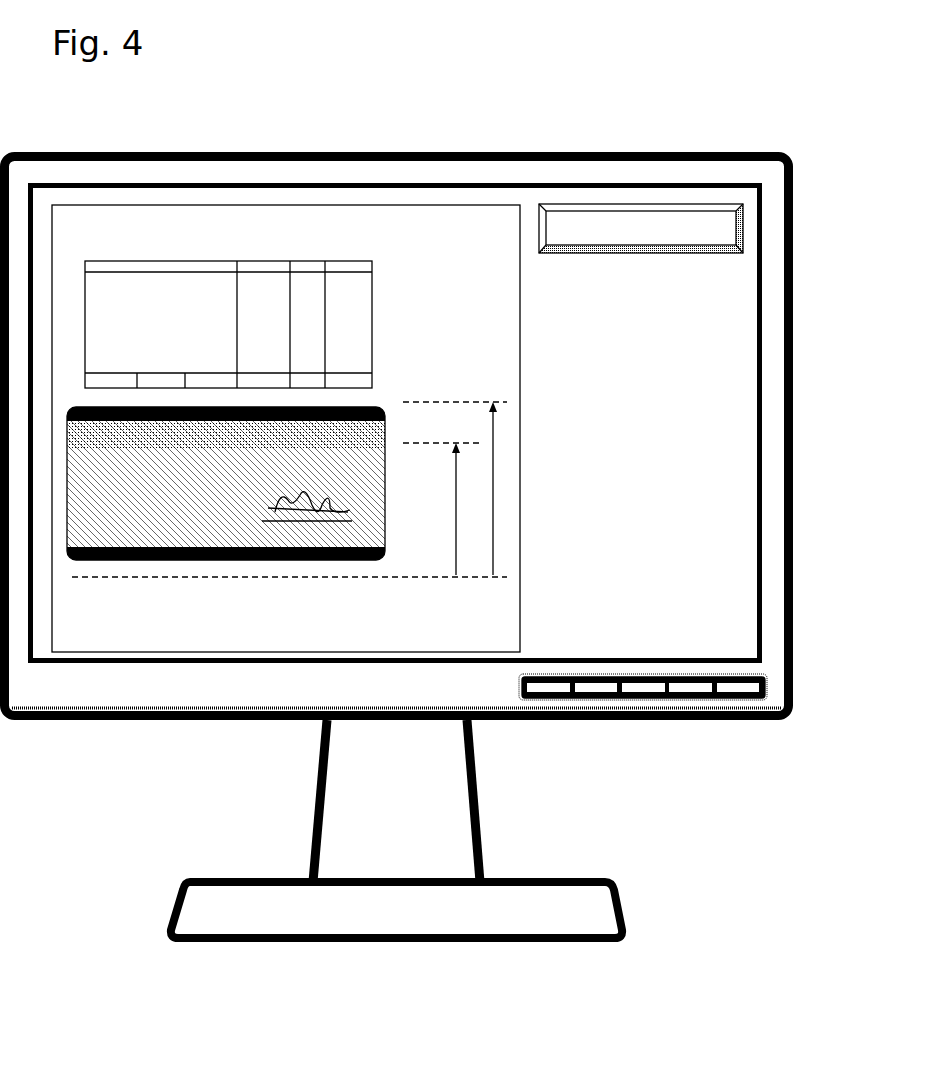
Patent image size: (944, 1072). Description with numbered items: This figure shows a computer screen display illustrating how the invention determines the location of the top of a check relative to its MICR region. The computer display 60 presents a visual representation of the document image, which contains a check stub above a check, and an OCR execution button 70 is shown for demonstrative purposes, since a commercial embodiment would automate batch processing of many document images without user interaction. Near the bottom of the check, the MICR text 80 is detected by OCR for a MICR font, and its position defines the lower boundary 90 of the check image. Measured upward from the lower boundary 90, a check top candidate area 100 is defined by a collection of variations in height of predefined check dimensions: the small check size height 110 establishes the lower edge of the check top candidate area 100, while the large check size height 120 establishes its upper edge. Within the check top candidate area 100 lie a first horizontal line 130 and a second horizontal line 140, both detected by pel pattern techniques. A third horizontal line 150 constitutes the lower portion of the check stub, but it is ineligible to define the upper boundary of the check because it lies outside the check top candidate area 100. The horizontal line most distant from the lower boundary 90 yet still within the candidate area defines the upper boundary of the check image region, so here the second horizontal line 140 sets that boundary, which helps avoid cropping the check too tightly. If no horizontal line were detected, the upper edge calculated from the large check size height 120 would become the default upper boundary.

The computer display 60 is at (387, 152).
The OCR execution button 70 is at (705, 255).
The MICR text 80 is at (268, 568).
The lower boundary 90 is at (308, 578).
The check top candidate area 100 is at (392, 403).
The small check size height 110 is at (456, 492).
The large check size height 120 is at (493, 488).
The first horizontal line 130 is at (359, 428).
The second horizontal line 140 is at (364, 400).
The third horizontal line 150 is at (250, 383).